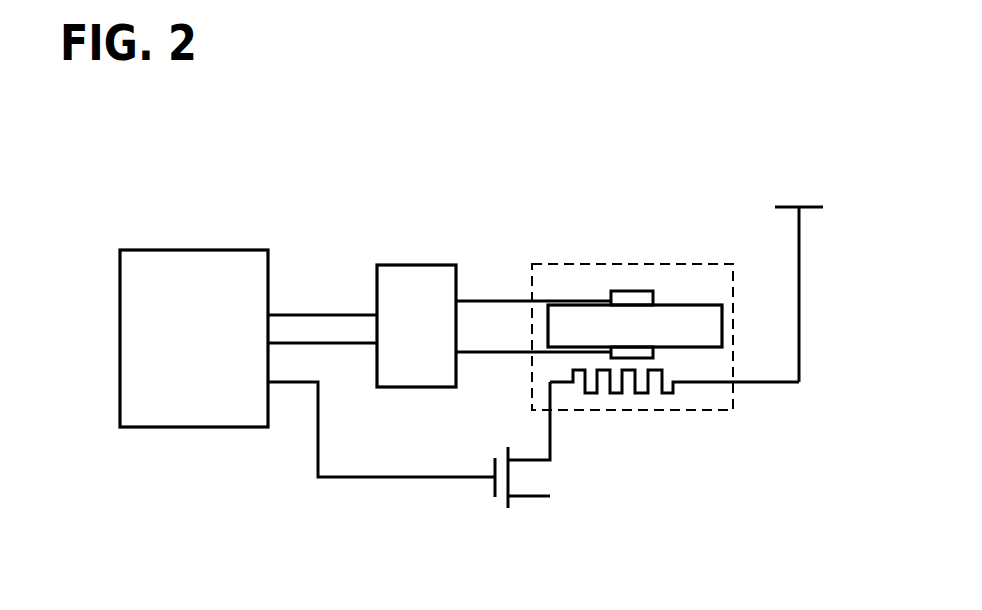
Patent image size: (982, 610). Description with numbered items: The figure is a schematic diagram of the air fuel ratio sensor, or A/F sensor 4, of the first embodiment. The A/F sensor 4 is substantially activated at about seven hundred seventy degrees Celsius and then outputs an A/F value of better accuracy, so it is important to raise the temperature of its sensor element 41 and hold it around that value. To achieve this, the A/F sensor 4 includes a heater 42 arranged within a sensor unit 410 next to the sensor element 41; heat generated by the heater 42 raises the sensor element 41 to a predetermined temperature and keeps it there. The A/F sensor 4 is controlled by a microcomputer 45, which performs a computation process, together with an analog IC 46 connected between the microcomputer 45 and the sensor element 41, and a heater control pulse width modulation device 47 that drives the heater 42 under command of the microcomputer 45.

The A/F sensor 4 is at (665, 316).
The sensor element 41 is at (572, 320).
The heater 42 is at (643, 393).
The microcomputer 45 is at (190, 250).
The analog IC 46 is at (425, 264).
The heater control pulse width modulation (PWM) 47 is at (484, 487).
The sensor unit 410 is at (708, 264).